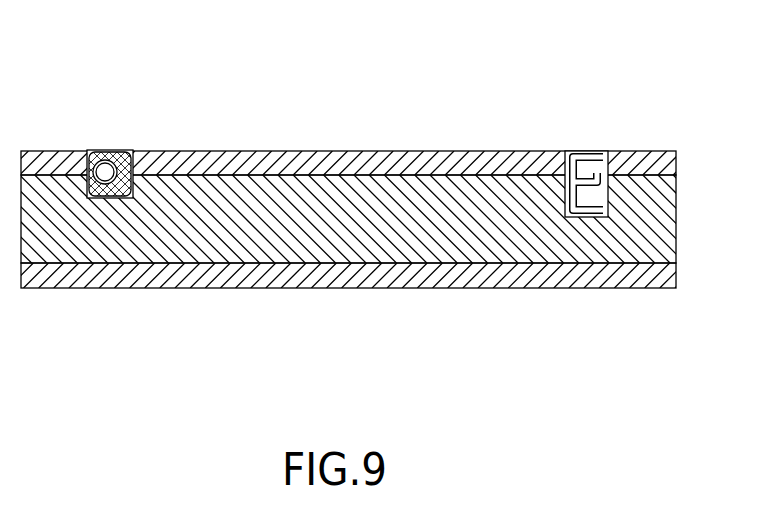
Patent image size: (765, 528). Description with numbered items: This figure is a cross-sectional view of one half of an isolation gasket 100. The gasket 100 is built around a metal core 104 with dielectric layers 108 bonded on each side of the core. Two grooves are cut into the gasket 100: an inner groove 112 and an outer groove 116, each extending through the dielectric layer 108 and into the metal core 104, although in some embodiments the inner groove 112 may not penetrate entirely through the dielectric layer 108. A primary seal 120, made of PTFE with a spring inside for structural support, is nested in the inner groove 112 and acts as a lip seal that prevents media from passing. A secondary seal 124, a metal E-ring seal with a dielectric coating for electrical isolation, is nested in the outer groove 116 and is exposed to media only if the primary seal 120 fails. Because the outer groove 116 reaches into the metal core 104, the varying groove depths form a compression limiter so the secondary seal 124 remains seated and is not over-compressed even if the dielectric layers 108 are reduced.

The gasket 100 is at (380, 165).
The metal core 104 is at (667, 255).
The dielectric layers 108 is at (673, 163).
The inner groove 112 is at (120, 126).
The outer groove 116 is at (568, 135).
The primary seal 120 is at (108, 150).
The secondary seal 124 is at (570, 150).